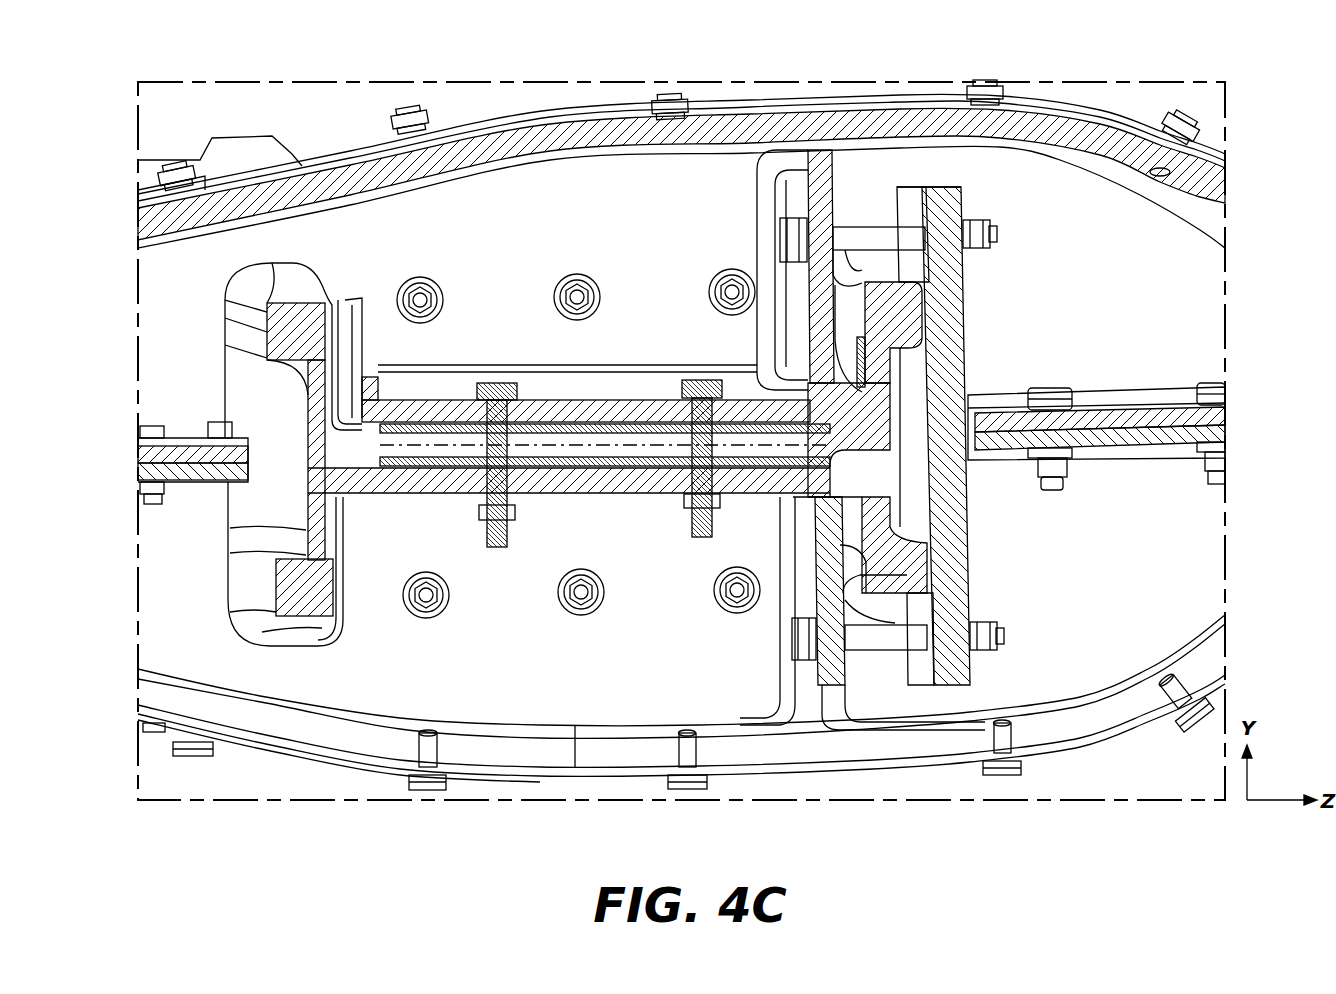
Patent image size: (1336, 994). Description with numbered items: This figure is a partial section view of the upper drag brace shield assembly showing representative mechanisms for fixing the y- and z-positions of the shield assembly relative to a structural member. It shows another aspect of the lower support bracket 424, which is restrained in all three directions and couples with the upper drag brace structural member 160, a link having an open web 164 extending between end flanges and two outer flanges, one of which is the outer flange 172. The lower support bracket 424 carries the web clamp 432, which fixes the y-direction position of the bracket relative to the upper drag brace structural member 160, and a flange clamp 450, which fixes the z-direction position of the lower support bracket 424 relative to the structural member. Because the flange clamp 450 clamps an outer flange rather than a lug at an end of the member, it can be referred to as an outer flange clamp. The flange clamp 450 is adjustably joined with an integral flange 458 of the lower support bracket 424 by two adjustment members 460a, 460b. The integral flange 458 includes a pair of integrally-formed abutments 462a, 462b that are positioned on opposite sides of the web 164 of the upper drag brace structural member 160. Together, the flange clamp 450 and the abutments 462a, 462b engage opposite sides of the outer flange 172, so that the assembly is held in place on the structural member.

The lower support bracket 424 is at (1078, 118).
The upper drag brace structural member 160 is at (283, 333).
The web clamp 432 is at (540, 399).
The web 164 is at (410, 457).
The integral flange 458 is at (820, 195).
The abutment 462a is at (762, 157).
The abutment 462b is at (857, 527).
The adjustment member 460a is at (880, 233).
The adjustment member 460b is at (873, 640).
The flange clamp 450 is at (955, 308).
The outer flange 172 is at (917, 563).